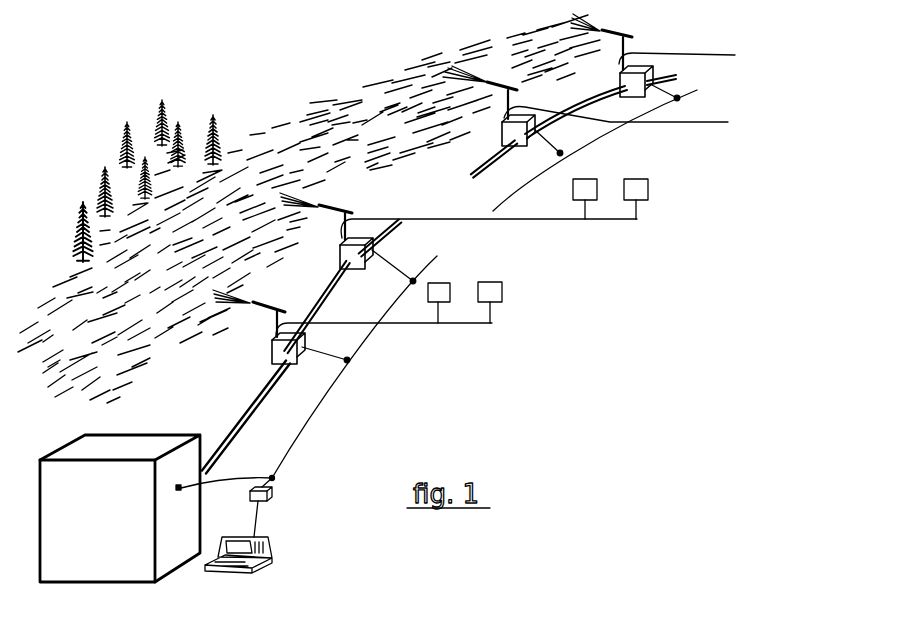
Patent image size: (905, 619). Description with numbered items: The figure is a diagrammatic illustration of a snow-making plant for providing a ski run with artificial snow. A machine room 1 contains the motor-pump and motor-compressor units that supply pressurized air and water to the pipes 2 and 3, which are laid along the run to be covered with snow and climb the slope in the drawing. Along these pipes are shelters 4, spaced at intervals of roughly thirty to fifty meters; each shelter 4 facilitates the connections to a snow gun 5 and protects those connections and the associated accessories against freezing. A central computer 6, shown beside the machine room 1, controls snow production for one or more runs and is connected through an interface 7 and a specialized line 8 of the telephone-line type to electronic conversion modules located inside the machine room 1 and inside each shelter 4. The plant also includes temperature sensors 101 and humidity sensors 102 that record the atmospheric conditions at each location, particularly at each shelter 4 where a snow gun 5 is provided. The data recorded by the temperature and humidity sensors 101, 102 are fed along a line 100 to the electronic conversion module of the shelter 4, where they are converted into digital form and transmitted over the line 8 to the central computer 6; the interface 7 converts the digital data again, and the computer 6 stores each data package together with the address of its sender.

The machine room 1 is at (109, 524).
The pipe 2 is at (235, 420).
The pipe 3 is at (268, 385).
The shelter 4 is at (272, 343).
The snow gun 5 is at (262, 299).
The central computer 6 is at (272, 556).
The interface 7 is at (273, 492).
The specialized line 8 is at (484, 282).
The line 100 is at (405, 323).
The temperature sensor 101 is at (447, 283).
The humidity sensor 102 is at (503, 287).